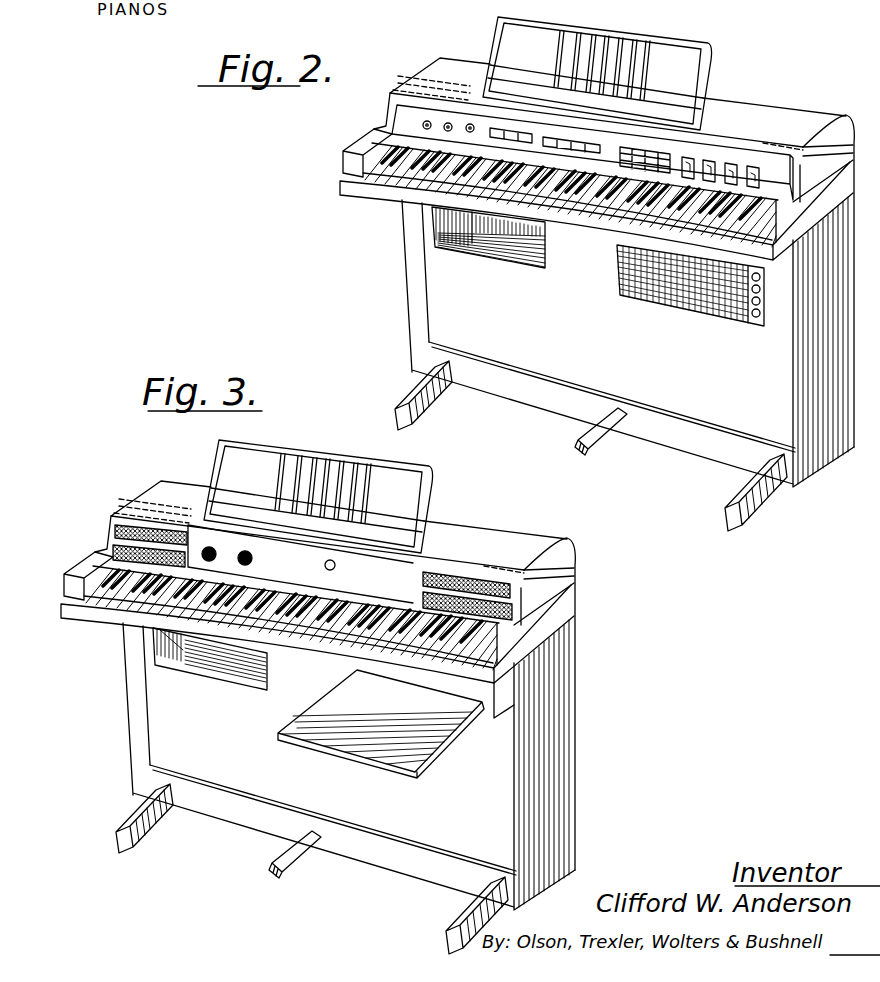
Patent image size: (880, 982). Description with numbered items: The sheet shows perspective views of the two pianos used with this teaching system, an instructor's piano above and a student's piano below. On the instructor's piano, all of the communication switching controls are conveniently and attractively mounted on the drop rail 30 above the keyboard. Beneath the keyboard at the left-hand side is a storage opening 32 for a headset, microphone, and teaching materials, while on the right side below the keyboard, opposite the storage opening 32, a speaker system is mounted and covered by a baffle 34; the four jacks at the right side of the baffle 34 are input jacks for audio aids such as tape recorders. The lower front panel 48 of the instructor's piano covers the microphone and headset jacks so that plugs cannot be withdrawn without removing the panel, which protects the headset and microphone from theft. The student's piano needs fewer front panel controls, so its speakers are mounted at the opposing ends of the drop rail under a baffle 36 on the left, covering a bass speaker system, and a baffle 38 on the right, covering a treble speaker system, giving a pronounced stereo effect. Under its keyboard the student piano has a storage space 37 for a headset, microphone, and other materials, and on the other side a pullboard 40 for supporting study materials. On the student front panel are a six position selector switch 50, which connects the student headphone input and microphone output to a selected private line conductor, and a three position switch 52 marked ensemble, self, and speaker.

In FIG. 2, the drop rail 30 is at (397, 112).
In FIG. 2, the storage opening 32 is at (448, 223).
In FIG. 2, the baffle 34 is at (680, 298).
In FIG. 2, the lower front panel 48 is at (552, 362).
In FIG. 3, the baffle 36 is at (113, 530).
In FIG. 3, the baffle 38 is at (502, 585).
In FIG. 3, the storage space 37 is at (220, 668).
In FIG. 3, the pullboard 40 is at (437, 745).
In FIG. 3, the six position selector switch 50 is at (205, 548).
In FIG. 3, the three position switch 52 is at (245, 551).